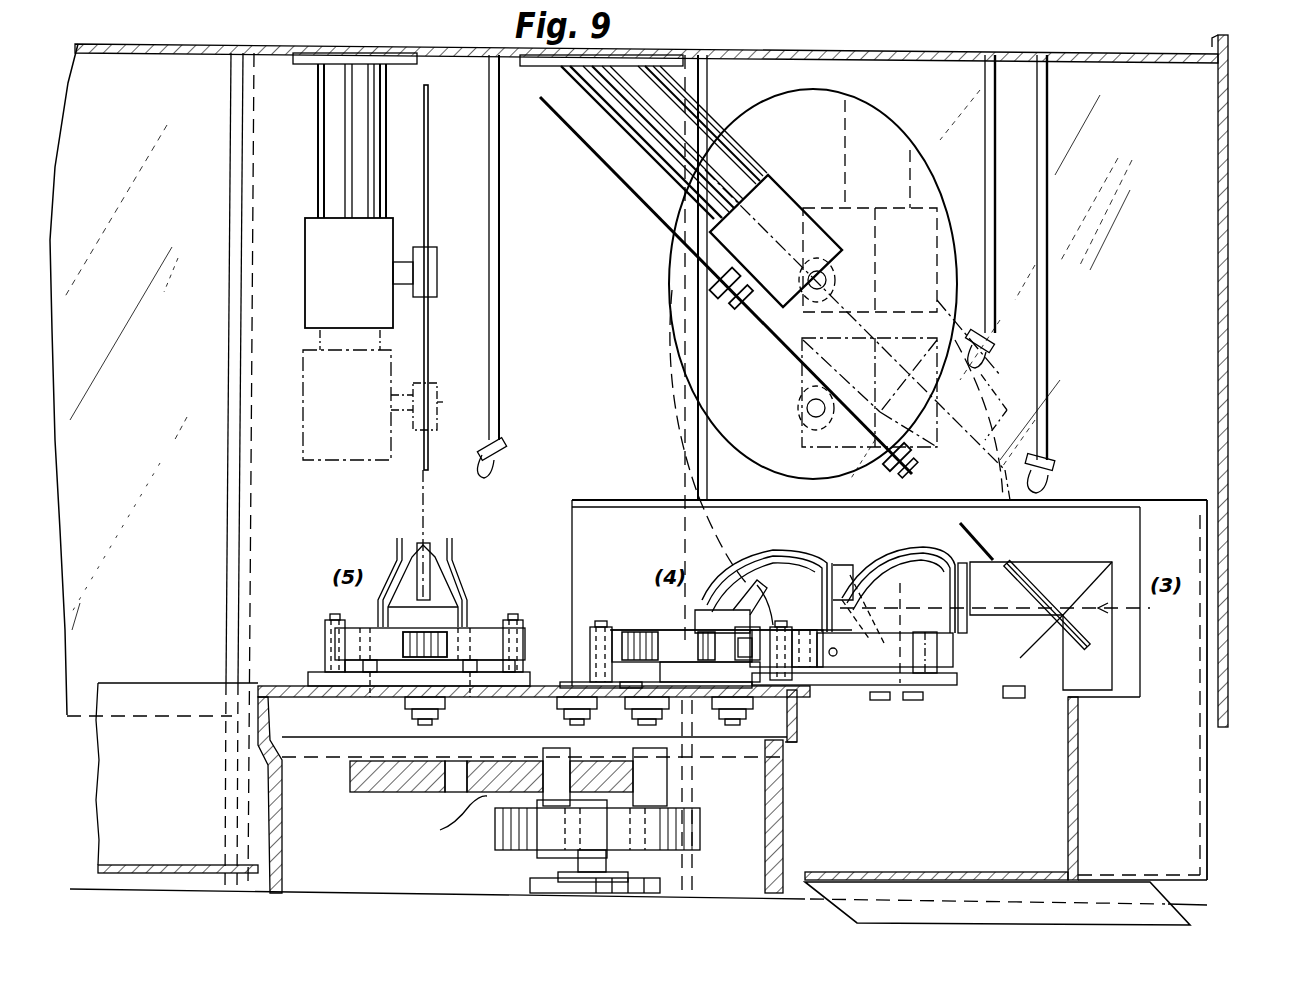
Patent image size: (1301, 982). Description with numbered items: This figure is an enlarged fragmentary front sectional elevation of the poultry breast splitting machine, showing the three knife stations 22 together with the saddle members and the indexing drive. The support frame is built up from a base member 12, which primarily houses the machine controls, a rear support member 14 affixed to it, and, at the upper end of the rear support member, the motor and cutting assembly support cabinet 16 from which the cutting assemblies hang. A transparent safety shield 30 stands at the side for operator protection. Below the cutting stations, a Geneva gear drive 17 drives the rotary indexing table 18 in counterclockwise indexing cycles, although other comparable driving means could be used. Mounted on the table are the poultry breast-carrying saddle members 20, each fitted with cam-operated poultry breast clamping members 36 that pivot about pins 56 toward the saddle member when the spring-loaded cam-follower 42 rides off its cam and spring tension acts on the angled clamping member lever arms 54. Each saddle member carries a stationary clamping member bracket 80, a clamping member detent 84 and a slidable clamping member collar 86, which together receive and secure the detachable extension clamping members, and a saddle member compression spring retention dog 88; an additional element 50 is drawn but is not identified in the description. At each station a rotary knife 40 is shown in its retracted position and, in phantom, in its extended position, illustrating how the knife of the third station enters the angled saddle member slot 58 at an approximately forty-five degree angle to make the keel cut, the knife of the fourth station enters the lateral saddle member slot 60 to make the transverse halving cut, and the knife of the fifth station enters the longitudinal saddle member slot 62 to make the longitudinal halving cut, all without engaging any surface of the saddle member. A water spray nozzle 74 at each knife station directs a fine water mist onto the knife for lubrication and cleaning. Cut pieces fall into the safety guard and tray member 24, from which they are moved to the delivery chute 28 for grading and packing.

The base member 12 is at (370, 889).
The rear support member 14 is at (230, 395).
The motor and cutting assembly support cabinet 16 is at (947, 54).
The Geneva gear drive 17 is at (460, 829).
The rotary indexing table 18 is at (797, 746).
The poultry breast-carrying saddle member 20 is at (460, 585).
The knife station 22 is at (1166, 129).
The safety guard and tray member 24 is at (1068, 760).
The delivery chute 28 is at (1174, 900).
The transparent safety shield 30 is at (1229, 226).
The poultry breast clamping member 36 is at (397, 546).
The rotary knife 40 is at (430, 122).
The spring-loaded cam-follower 42 is at (446, 632).
The base block 50 is at (312, 672).
The angled clamping member lever arm 54 is at (340, 626).
The pin 56 is at (331, 614).
The angled saddle member slot 58 is at (828, 560).
The lateral saddle member slot 60 is at (967, 633).
The longitudinal saddle member slot 62 is at (426, 548).
The water spray nozzle 74 is at (506, 452).
The stationary poultry breast clamping member bracket 80 is at (367, 665).
The poultry breast clamping member detent 84 is at (836, 658).
The slidable poultry breast clamping member collar 86 is at (762, 625).
The saddle member compression spring retention dog 88 is at (395, 662).